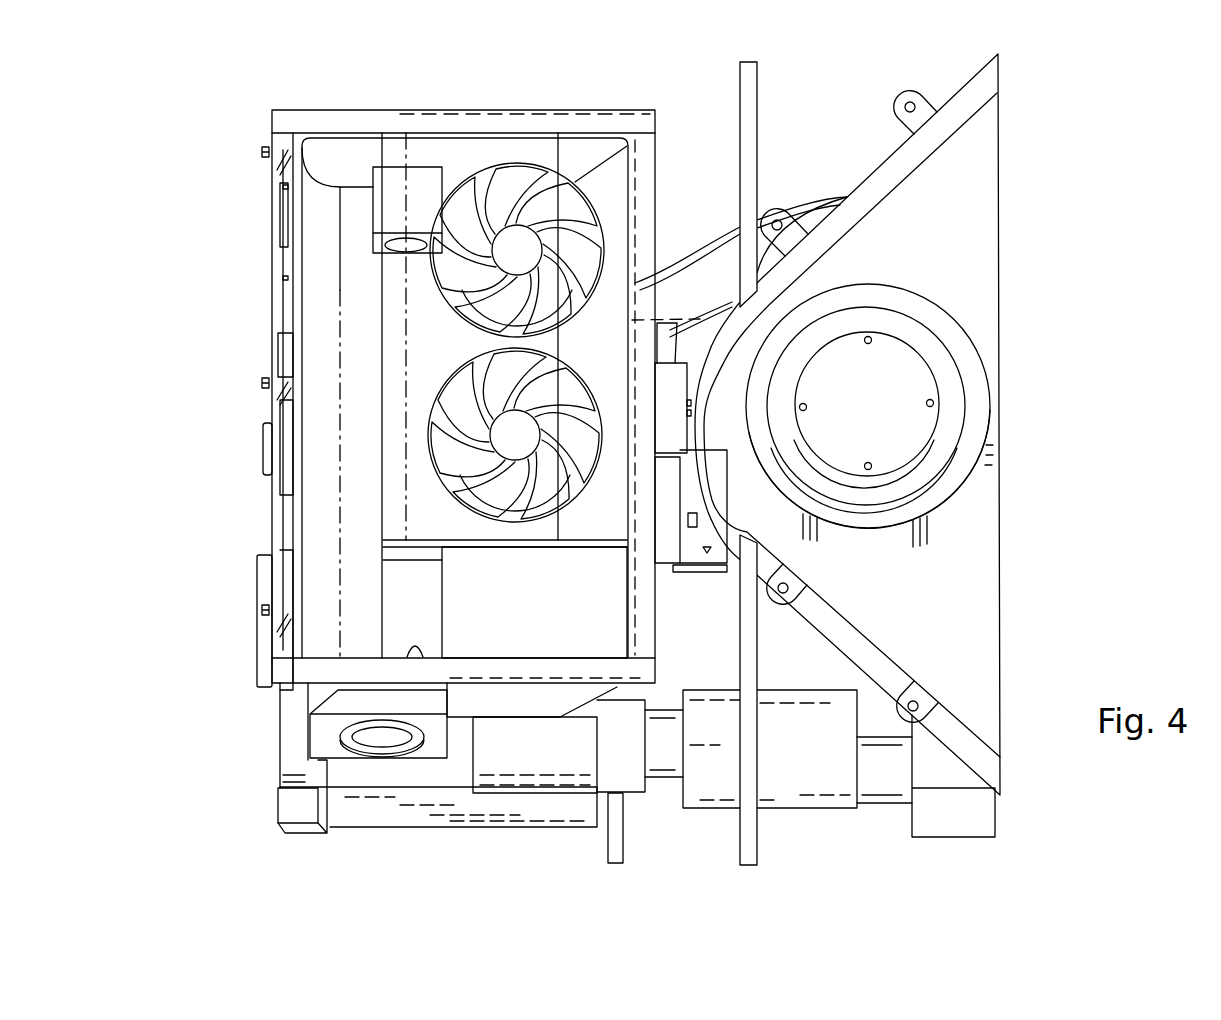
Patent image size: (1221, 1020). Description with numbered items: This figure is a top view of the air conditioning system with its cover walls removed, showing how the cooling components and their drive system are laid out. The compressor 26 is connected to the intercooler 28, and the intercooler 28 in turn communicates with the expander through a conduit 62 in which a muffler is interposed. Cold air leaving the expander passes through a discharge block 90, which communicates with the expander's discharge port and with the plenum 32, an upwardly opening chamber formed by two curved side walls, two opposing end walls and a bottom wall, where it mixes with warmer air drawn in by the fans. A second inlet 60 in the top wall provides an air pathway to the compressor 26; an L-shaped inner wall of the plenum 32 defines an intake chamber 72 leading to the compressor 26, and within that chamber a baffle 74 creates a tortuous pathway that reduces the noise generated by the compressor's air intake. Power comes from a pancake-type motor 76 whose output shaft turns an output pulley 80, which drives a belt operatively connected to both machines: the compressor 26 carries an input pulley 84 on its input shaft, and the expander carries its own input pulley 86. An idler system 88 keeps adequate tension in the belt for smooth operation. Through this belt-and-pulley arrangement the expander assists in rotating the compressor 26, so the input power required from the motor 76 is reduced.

The compressor 26 is at (367, 810).
The intercooler 28 is at (962, 778).
The plenum 32 is at (330, 132).
The second inlet 60 is at (665, 777).
The conduit 62 is at (718, 250).
The intake chamber 72 is at (413, 650).
The baffle 74 is at (553, 637).
The pancake-type motor 76 is at (677, 345).
The output pulley 80 is at (267, 447).
The input pulley 84 is at (280, 740).
The input pulley 86 is at (282, 253).
The idler system 88 is at (265, 582).
The discharge block 90 is at (378, 213).